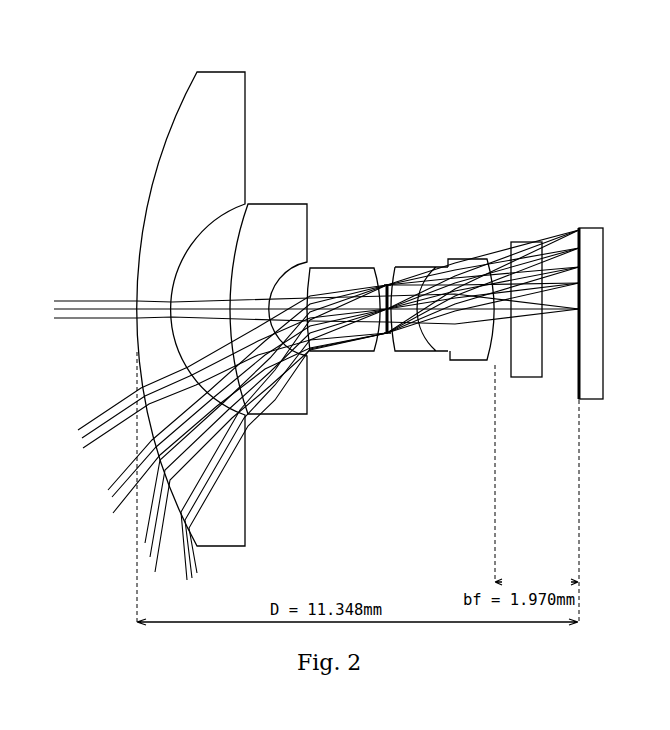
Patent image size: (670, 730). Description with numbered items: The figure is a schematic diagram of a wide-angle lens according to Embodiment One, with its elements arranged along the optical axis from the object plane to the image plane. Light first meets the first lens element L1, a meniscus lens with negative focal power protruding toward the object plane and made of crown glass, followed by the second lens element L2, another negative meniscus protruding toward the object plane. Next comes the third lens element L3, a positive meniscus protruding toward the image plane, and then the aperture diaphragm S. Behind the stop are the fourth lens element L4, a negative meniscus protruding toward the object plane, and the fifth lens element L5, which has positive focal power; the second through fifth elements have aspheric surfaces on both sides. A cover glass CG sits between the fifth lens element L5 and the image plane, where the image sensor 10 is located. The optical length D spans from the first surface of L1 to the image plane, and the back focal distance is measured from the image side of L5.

The first lens element L1 is at (220, 71).
The second lens element L2 is at (277, 203).
The third lens element L3 is at (345, 267).
The aperture diaphragm S is at (387, 283).
The fourth lens element L4 is at (425, 266).
The fifth lens element L5 is at (480, 258).
The cover glass CG is at (523, 241).
The image sensor 10 is at (592, 227).